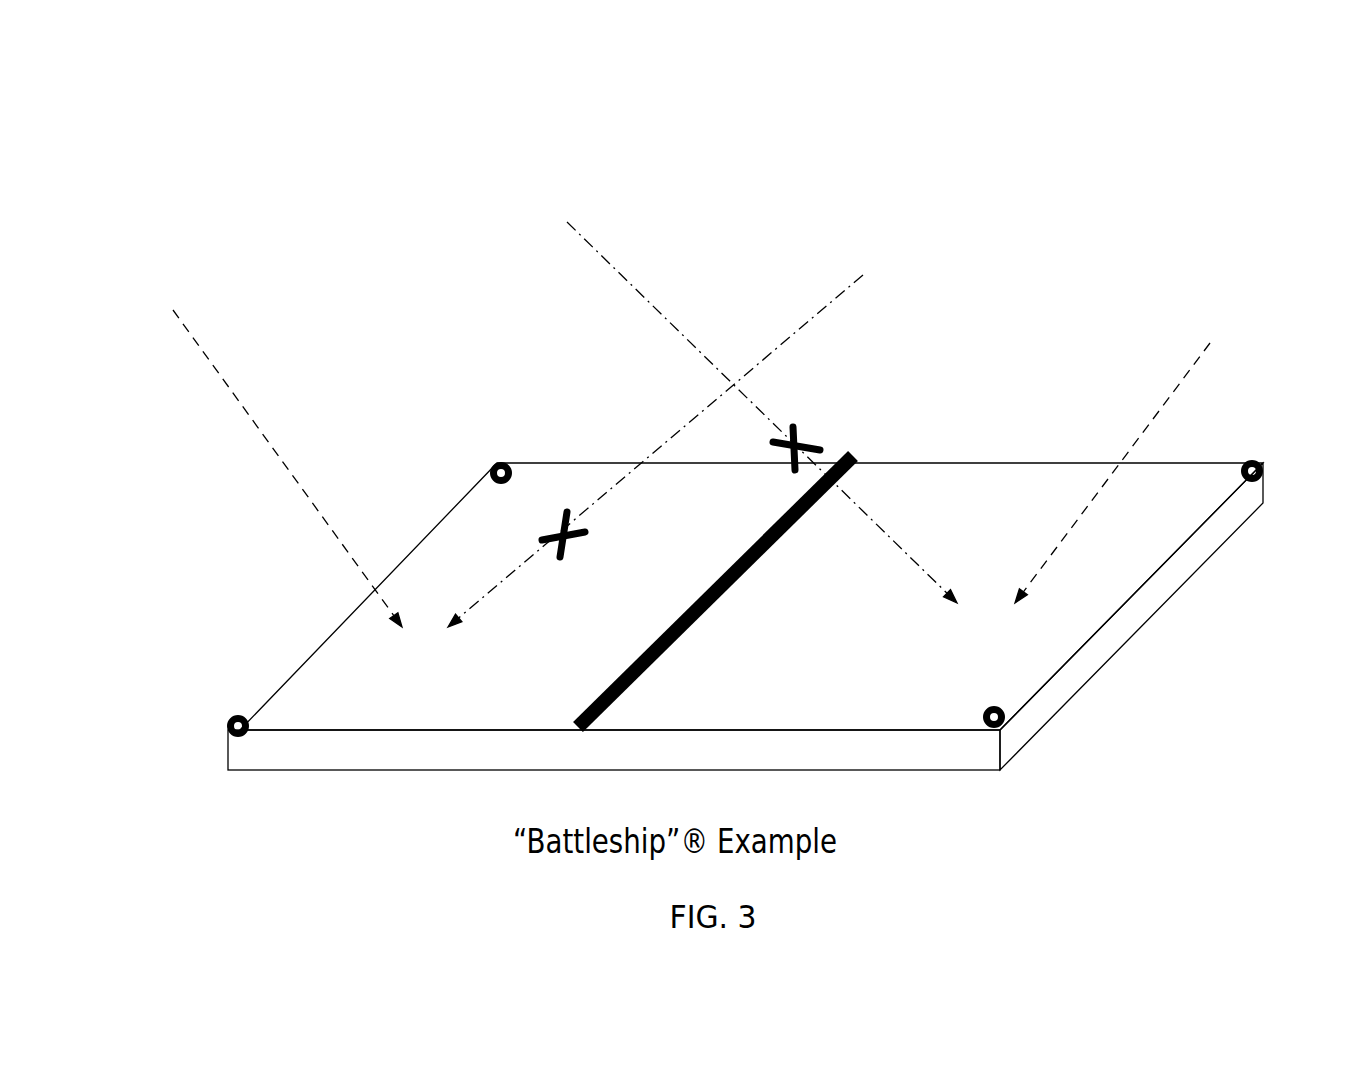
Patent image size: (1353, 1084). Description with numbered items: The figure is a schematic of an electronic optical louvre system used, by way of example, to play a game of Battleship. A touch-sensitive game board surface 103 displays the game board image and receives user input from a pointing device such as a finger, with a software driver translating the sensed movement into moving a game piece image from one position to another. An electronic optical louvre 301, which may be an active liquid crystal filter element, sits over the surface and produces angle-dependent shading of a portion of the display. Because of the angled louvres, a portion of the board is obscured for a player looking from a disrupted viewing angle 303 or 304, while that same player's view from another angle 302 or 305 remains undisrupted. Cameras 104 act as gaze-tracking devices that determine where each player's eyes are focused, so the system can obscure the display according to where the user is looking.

The touch-sensitive game board surface 103 is at (1145, 605).
The camera 104 is at (1252, 460).
The electronic optical louvre 301 is at (160, 814).
The undisrupted viewing angle of Player 2 302 is at (1163, 400).
The disrupted viewing angle of Player 2 303 is at (693, 386).
The disrupted viewing angle of Player 1 304 is at (729, 346).
The undisrupted viewing angle of Player 1 305 is at (255, 396).